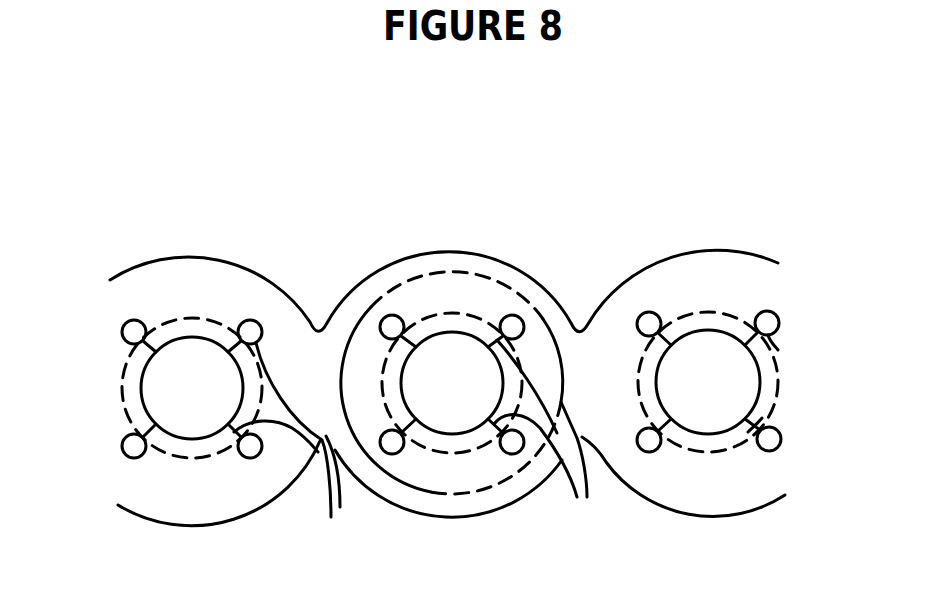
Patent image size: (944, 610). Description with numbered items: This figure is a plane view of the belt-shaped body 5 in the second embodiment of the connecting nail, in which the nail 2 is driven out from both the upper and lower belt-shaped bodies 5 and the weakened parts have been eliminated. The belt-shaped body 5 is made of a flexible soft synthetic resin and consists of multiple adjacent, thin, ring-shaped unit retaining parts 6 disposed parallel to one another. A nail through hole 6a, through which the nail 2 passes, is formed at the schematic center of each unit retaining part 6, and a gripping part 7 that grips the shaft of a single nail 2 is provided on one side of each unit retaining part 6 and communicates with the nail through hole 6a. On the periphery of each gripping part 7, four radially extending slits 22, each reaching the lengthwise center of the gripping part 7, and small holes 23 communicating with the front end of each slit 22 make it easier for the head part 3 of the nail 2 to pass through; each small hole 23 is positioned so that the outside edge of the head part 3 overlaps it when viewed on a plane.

The nail 2 is at (444, 234).
The head part 3 is at (382, 297).
The belt-shaped body 5 is at (585, 221).
The unit retaining part 6 is at (198, 277).
The nail through hole 6a is at (184, 349).
The gripping part 7 is at (188, 452).
The slit 22 is at (152, 434).
The small hole 23 is at (250, 320).